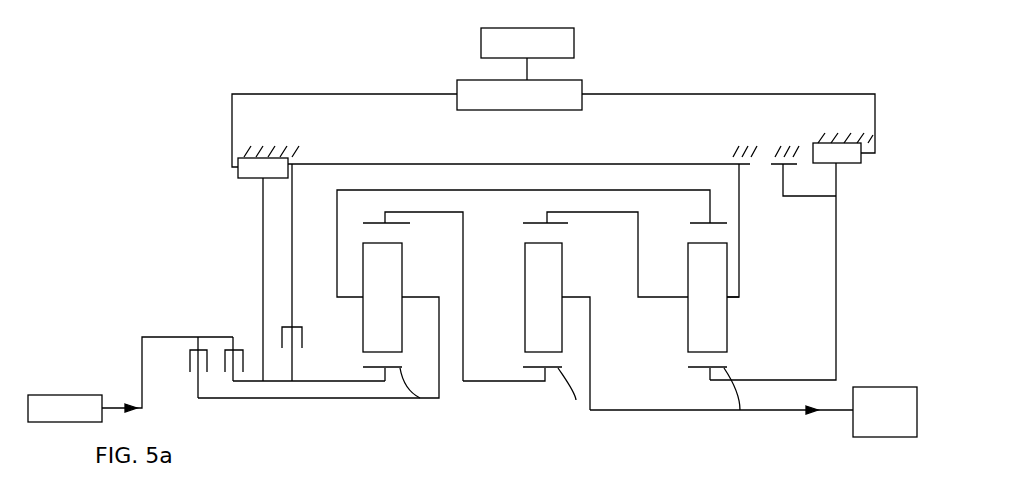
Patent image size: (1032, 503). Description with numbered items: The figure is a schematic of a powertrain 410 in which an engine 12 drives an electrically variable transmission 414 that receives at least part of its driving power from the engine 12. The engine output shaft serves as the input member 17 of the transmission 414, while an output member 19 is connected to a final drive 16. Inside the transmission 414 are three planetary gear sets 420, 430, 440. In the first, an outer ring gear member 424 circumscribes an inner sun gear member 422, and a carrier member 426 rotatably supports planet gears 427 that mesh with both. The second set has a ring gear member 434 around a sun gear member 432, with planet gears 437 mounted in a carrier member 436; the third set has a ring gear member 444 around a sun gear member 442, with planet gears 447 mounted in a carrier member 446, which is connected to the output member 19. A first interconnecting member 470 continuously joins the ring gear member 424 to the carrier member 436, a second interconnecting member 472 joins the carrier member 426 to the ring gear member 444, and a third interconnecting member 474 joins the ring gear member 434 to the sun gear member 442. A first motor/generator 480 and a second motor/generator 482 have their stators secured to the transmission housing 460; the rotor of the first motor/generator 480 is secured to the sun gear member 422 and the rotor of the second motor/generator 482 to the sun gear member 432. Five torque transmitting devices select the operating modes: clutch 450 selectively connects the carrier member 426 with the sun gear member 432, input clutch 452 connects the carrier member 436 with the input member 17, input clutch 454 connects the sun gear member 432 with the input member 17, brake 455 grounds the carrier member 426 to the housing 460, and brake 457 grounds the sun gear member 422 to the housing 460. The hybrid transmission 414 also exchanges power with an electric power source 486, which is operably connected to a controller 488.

The powertrain 410 is at (123, 152).
The electrically variable transmission 414 is at (127, 203).
The engine 12 is at (57, 395).
The final drive 16 is at (903, 387).
The input member 17 is at (142, 357).
The output member 19 is at (790, 412).
The first planetary gear set 420 is at (707, 372).
The inner sun gear member 422 is at (747, 405).
The outer ring gear member 424 is at (702, 226).
The carrier member 426 is at (686, 301).
The planet gears 427 is at (707, 297).
The second planetary gear set 430 is at (381, 372).
The inner sun gear member 432 is at (419, 400).
The outer ring gear member 434 is at (392, 225).
The carrier member 436 is at (406, 292).
The planet gears 437 is at (382, 297).
The third planetary gear set 440 is at (544, 372).
The inner sun gear member 442 is at (576, 400).
The outer ring gear member 444 is at (532, 226).
The carrier member 446 is at (568, 290).
The planet gears 447 is at (543, 297).
The clutch 450 is at (300, 324).
The input clutch 452 is at (196, 378).
The input clutch 454 is at (225, 348).
The brake 455 is at (726, 158).
The brake 457 is at (772, 164).
The transmission housing 460 is at (292, 152).
The first interconnecting member 470 is at (544, 189).
The second interconnecting member 472 is at (631, 210).
The third interconnecting member 474 is at (456, 210).
The first motor/generator 480 is at (866, 158).
The second motor/generator 482 is at (236, 172).
The electric power source 486 is at (574, 40).
The controller 488 is at (584, 89).